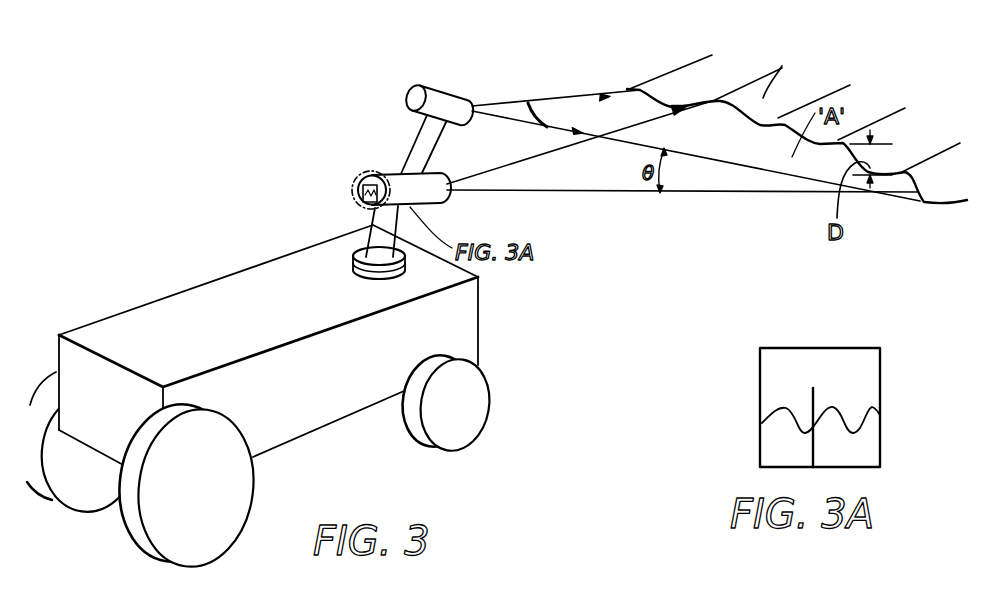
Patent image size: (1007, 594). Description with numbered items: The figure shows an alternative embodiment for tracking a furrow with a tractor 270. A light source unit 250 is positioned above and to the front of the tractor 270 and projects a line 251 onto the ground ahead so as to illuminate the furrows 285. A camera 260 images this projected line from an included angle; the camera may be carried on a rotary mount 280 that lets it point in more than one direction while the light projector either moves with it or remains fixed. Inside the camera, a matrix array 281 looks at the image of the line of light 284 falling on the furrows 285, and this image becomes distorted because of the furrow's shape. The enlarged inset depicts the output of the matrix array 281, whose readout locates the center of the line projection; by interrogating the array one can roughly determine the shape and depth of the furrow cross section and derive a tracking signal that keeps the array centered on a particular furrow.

In FIG. 3, the light source unit 250 is at (432, 88).
In FIG. 3, the line 251 is at (540, 107).
In FIG. 3, the camera 260 is at (392, 176).
In FIG. 3, the tractor 270 is at (348, 393).
In FIG. 3, the rotary mount 280 is at (355, 262).
In FIG. 3, the matrix array 281 is at (359, 174).
In FIG. 3A, the matrix array 281 is at (807, 348).
In FIG. 3, the image of the line of light 284 is at (361, 197).
In FIG. 3A, the image of the line of light 284 is at (880, 400).
In FIG. 3, the furrows 285 is at (737, 73).